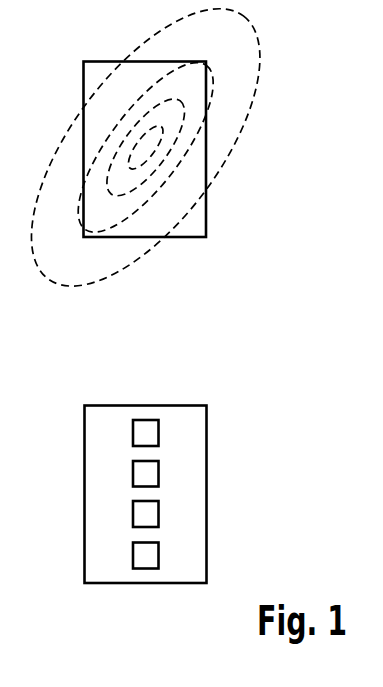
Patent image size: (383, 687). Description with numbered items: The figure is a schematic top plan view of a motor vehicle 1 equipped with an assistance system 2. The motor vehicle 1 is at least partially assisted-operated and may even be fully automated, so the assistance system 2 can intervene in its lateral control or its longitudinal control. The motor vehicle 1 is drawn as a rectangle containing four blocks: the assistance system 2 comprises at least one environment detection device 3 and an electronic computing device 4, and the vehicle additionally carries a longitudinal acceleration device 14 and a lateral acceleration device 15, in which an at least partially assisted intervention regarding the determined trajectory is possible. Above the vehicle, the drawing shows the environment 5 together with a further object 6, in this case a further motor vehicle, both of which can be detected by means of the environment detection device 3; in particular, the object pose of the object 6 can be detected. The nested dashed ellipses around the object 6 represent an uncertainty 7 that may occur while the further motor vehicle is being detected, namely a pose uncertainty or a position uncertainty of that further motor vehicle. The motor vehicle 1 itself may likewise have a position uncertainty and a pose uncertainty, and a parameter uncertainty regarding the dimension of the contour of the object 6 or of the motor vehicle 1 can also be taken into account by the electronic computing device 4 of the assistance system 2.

The motor vehicle 1 is at (84, 423).
The assistance system 2 is at (159, 513).
The environment detection device 3 is at (159, 430).
The electronic computing device 4 is at (159, 553).
The environment 5 is at (153, 346).
The object 6 is at (206, 217).
The uncertainty 7 is at (227, 108).
The longitudinal acceleration device 14 is at (159, 473).
The lateral acceleration device 15 is at (145, 475).